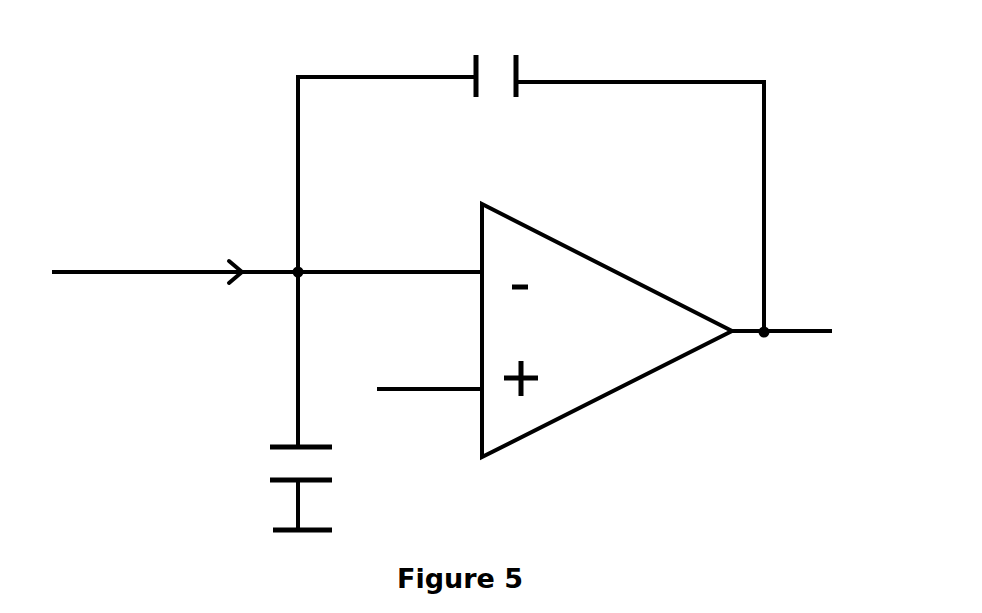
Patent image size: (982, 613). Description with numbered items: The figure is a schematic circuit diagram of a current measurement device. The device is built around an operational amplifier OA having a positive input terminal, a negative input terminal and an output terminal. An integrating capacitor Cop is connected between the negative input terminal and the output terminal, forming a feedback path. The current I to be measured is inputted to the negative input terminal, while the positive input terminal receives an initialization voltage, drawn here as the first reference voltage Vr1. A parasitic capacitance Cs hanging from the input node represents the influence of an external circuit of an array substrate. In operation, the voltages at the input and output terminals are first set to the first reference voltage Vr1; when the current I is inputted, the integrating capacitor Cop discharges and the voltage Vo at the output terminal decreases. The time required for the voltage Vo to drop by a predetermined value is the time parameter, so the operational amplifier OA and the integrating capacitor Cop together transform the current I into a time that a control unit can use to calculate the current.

The current I is at (267, 259).
The integrating capacitor Cop is at (531, 171).
The parasitic capacitance Cs is at (266, 401).
The operational amplifier OA is at (607, 330).
The first reference voltage Vr1 is at (427, 365).
The output terminal voltage Vo is at (782, 361).